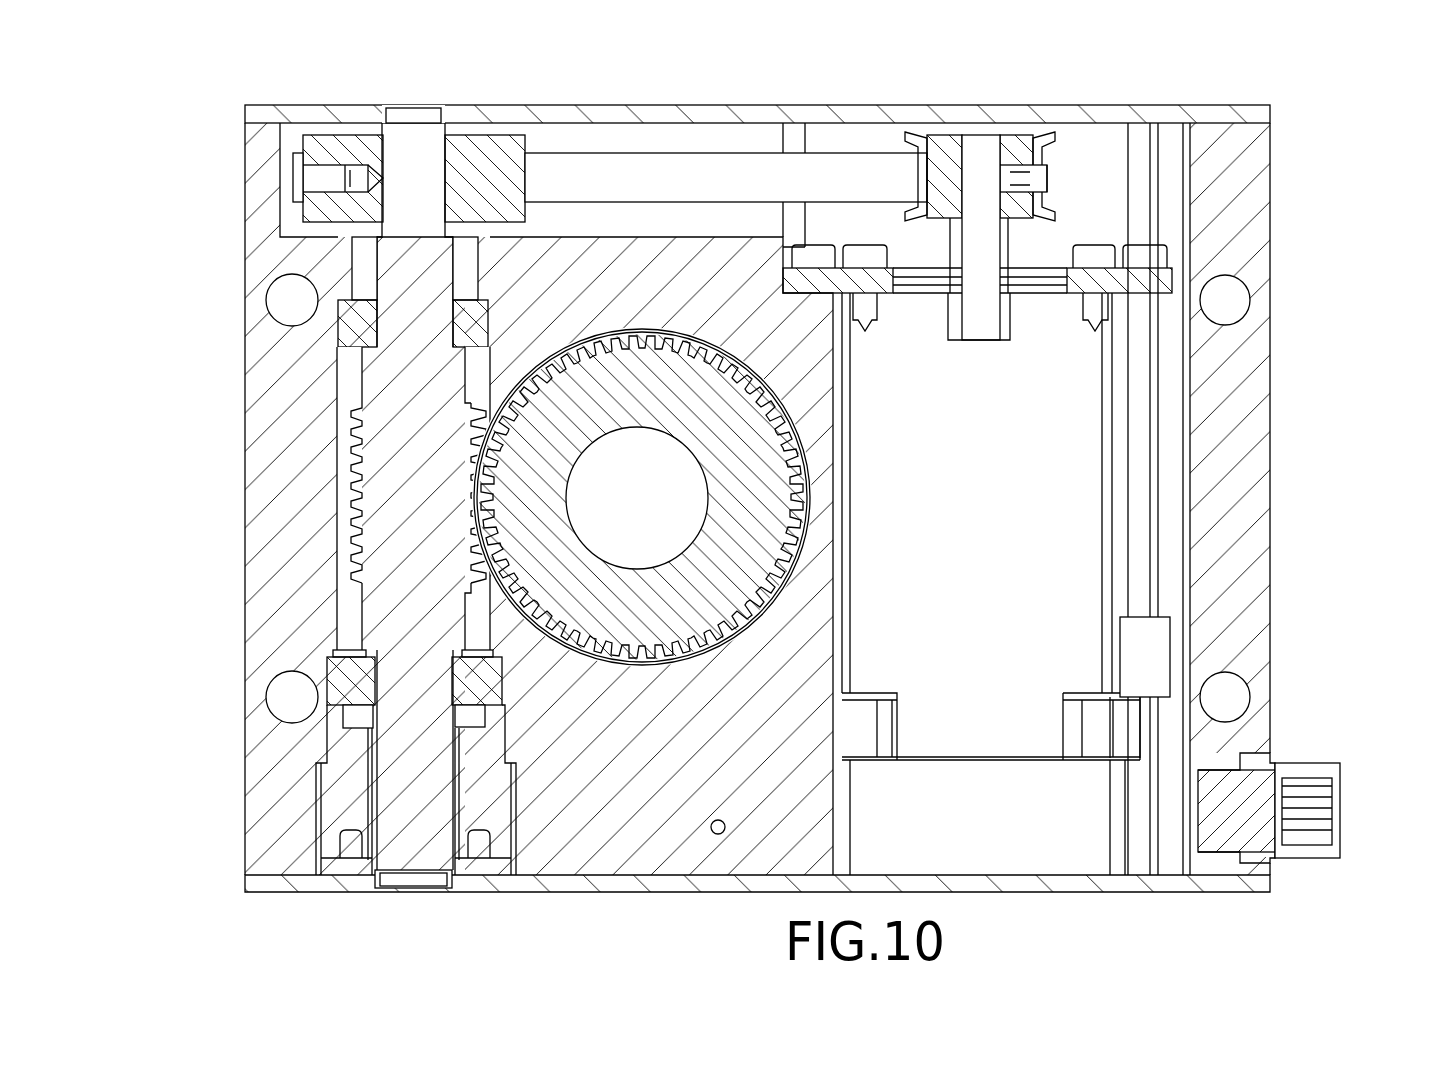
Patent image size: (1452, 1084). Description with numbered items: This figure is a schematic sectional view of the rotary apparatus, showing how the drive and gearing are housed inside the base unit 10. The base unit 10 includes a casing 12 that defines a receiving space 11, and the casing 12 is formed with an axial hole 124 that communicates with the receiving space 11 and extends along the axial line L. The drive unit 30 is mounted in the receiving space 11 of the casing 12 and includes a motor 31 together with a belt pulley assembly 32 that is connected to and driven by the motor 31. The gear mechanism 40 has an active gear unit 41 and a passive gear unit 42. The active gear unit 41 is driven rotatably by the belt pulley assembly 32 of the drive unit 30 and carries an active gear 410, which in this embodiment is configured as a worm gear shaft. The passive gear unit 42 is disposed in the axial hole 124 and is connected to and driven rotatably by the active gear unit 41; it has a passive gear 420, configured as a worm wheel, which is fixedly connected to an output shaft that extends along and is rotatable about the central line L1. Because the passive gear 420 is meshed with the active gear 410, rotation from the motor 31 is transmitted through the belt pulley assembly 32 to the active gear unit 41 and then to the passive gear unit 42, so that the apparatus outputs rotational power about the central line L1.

The base unit 10 is at (846, 498).
The casing 12 is at (1262, 505).
The receiving space 11 is at (1178, 547).
The active gear unit 41 is at (395, 369).
The gear mechanism 40 is at (313, 526).
The active gear 410 is at (352, 511).
The passive gear unit 42 is at (642, 499).
The passive gear 420 is at (642, 499).
The axial hole 124 is at (655, 333).
The belt pulley assembly 32 is at (1013, 135).
The drive unit 30 is at (1121, 584).
The motor 31 is at (1078, 433).
The central line L1 is at (637, 494).
The axial line L is at (637, 498).